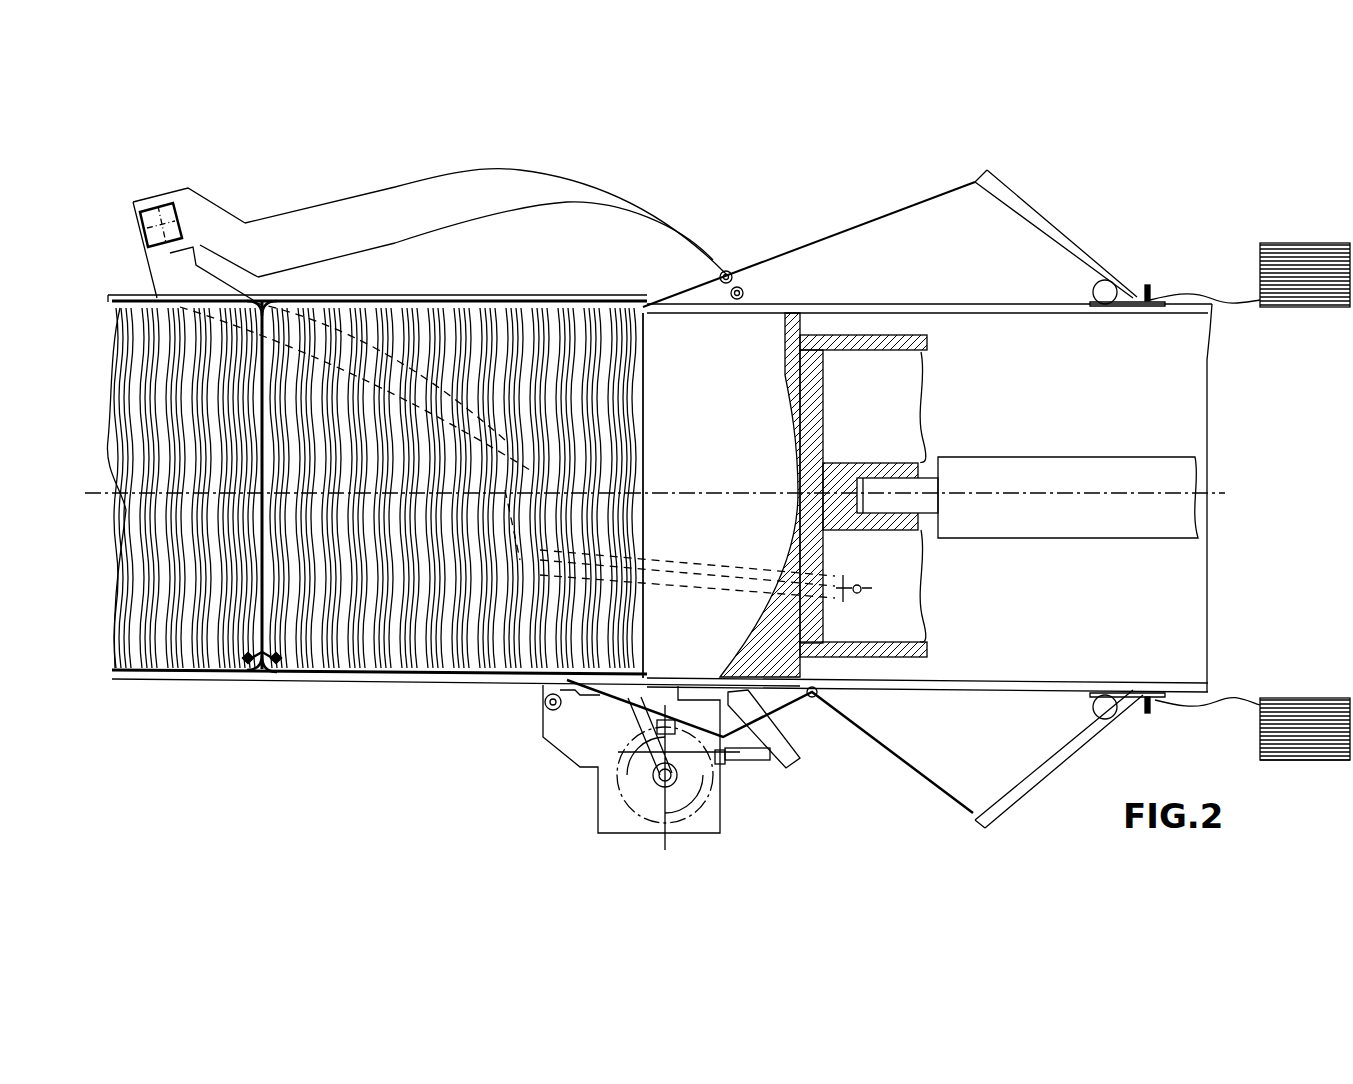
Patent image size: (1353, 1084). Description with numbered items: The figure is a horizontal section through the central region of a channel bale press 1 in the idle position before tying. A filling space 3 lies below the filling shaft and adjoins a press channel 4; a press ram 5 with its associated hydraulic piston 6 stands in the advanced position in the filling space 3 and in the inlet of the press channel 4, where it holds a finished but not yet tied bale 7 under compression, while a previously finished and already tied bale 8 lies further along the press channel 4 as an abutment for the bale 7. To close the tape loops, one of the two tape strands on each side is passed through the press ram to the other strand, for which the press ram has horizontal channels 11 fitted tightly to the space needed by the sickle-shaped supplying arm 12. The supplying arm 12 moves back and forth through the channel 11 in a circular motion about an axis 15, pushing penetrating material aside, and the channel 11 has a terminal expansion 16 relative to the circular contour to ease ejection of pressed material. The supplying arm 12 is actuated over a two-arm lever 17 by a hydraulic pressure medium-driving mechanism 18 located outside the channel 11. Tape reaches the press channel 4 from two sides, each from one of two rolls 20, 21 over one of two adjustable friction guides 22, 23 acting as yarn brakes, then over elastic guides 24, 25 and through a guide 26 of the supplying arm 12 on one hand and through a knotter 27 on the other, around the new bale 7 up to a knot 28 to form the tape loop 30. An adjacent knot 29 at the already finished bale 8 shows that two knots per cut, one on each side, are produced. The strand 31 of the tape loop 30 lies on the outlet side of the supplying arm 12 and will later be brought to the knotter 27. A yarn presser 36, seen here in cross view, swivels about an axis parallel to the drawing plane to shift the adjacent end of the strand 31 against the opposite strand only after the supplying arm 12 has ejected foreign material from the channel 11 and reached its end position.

The channel bale press 1 is at (1150, 158).
The filling space 3 is at (1105, 395).
The press channel 4 is at (350, 710).
The press ram 5 is at (800, 410).
The piston 6 is at (1047, 528).
The bale 7 is at (396, 552).
The tied bale 8 is at (196, 515).
The channel 11 is at (740, 432).
The supplying arm 12 is at (555, 187).
The axis 15 is at (490, 455).
The terminal expansion 16 is at (788, 306).
The two-arm lever 17 is at (160, 270).
The hydraulic pressure medium-driving mechanism 18 is at (695, 565).
The roll 20 is at (1272, 243).
The roll 21 is at (1297, 762).
The adjustable friction guide 22 is at (1138, 290).
The adjustable friction guide 23 is at (1160, 700).
The elastic guide 24 is at (1010, 188).
The elastic guide 25 is at (1012, 800).
The guide 26 is at (735, 270).
The knotter 27 is at (573, 774).
The knot 28 is at (268, 665).
The knot 29 is at (250, 665).
The tape loop 30 is at (440, 676).
The strand 31 is at (874, 223).
The yarn presser 36 is at (548, 703).